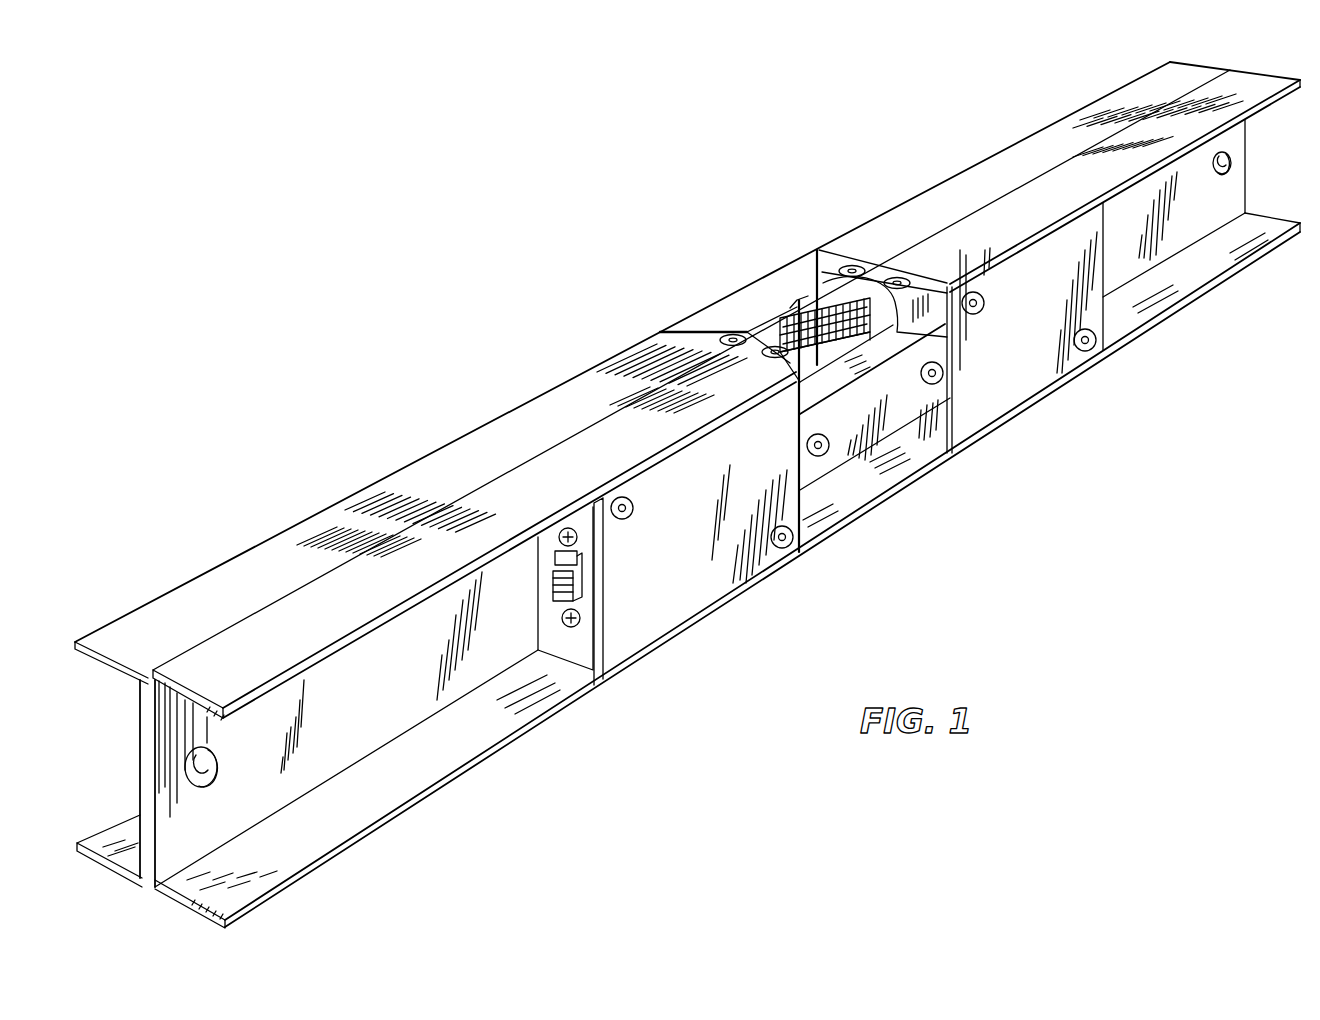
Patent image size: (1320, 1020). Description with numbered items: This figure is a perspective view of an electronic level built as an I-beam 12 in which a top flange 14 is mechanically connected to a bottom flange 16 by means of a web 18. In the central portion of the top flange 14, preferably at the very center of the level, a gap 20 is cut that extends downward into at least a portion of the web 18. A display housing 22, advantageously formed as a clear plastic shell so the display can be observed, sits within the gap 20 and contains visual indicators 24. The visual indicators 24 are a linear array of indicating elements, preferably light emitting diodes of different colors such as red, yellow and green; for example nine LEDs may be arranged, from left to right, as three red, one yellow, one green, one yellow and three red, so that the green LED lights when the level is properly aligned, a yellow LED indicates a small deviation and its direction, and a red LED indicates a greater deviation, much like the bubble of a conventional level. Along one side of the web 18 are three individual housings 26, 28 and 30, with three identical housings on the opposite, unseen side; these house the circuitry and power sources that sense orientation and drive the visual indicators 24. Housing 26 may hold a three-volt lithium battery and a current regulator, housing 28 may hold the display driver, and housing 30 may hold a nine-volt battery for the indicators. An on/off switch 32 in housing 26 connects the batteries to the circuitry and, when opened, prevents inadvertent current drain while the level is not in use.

The I-beam 12 is at (262, 524).
The top flange 14 is at (381, 488).
The bottom flange 16 is at (408, 778).
The web 18 is at (433, 703).
The gap 20 is at (820, 266).
The display housing 22 is at (797, 306).
The visual indicators 24 is at (786, 321).
The housing 26 is at (706, 592).
The housing 28 is at (842, 453).
The housing 30 is at (992, 407).
The on/off switch 32 is at (553, 572).